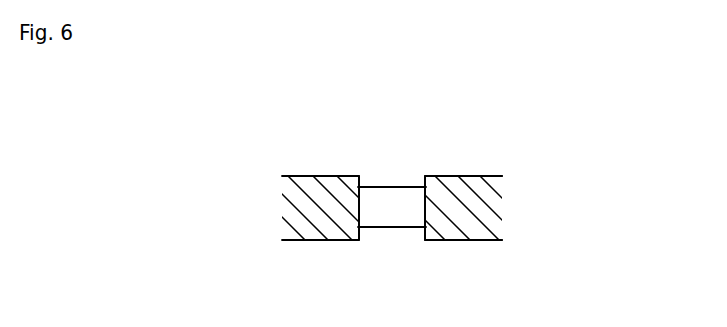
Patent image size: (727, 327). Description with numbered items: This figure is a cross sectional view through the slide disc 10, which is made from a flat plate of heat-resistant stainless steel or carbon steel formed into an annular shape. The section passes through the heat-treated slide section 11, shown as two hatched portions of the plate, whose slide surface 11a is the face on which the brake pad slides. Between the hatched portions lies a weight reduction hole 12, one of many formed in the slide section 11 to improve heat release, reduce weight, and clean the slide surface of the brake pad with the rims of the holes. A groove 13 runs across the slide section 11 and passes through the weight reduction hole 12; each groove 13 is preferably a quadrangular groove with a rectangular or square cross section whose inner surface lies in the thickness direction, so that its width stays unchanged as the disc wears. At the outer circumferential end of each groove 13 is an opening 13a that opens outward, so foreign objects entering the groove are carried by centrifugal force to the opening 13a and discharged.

The slide disc 10 is at (384, 204).
The slide section 11 is at (453, 176).
The slide surface 11a is at (492, 176).
The weight reduction hole 12 is at (360, 214).
The groove 13 is at (359, 179).
The opening 13a is at (389, 187).